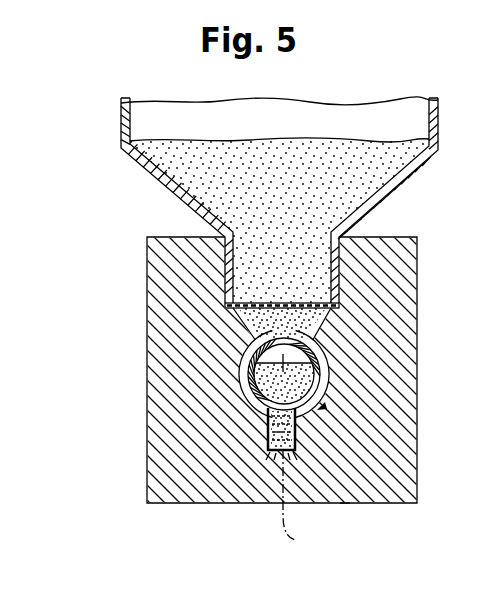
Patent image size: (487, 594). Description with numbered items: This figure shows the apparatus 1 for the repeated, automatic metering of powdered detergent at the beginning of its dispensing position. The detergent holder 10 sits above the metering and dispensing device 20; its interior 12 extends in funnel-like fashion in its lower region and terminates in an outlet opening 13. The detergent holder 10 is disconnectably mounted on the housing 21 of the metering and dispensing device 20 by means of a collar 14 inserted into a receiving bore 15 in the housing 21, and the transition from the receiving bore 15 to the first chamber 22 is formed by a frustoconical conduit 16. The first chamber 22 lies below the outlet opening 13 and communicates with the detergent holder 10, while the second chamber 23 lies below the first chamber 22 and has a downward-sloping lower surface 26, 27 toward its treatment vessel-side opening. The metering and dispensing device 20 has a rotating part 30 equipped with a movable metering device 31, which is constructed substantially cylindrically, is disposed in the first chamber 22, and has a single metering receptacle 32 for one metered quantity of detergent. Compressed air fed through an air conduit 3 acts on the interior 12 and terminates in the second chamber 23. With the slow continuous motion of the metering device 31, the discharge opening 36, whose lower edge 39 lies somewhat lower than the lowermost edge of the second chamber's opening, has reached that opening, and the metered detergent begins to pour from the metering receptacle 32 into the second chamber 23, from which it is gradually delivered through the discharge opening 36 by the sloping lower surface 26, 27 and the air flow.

The apparatus 1 is at (374, 92).
The interior 12 is at (411, 122).
The detergent holder 10 is at (166, 203).
The collar 14 is at (394, 204).
The receiving bore 15 is at (337, 260).
The outlet opening 13 is at (337, 284).
The frustoconical conduit 16 is at (322, 321).
The metering and dispensing device 20 is at (192, 511).
The housing 21 is at (162, 288).
The metering receptacle 32 is at (328, 364).
The first chamber 22 is at (246, 392).
The rotating part 30 is at (205, 372).
The metering device 31 is at (248, 355).
The second chamber 23 is at (268, 410).
The discharge opening 36 is at (297, 440).
The lower surface 26 is at (255, 503).
The outlet opening 27 is at (265, 455).
The air conduit 3 is at (296, 502).
The lower edge 39 is at (294, 443).